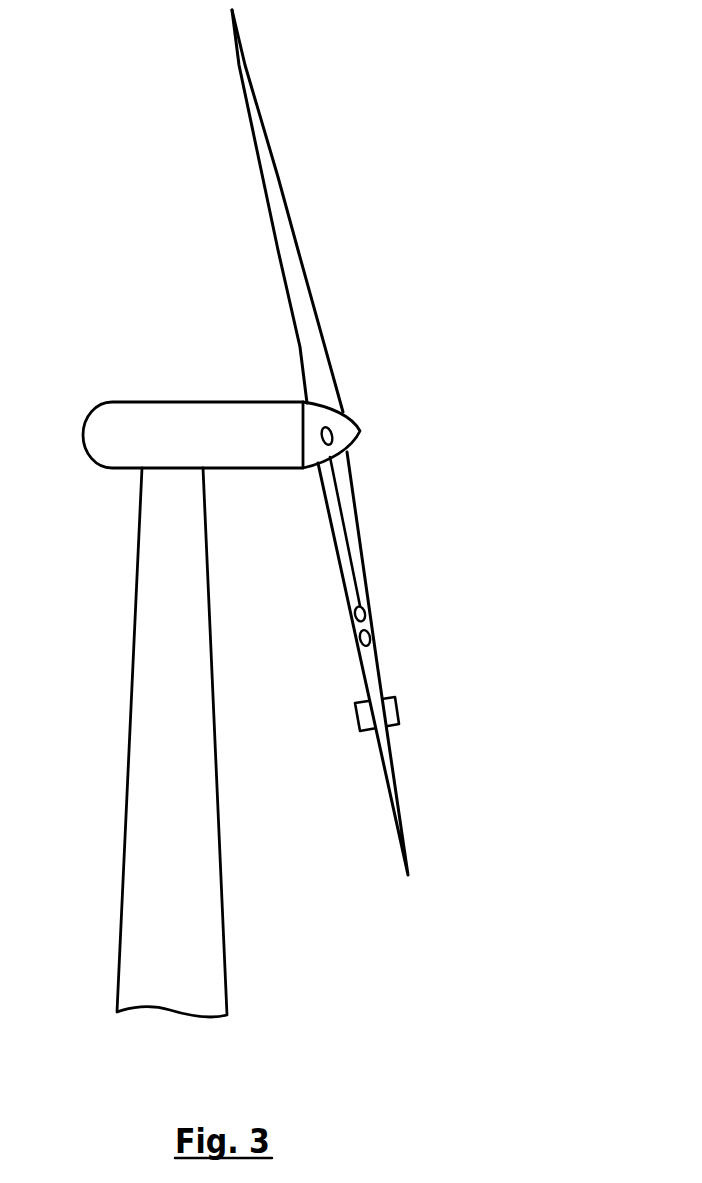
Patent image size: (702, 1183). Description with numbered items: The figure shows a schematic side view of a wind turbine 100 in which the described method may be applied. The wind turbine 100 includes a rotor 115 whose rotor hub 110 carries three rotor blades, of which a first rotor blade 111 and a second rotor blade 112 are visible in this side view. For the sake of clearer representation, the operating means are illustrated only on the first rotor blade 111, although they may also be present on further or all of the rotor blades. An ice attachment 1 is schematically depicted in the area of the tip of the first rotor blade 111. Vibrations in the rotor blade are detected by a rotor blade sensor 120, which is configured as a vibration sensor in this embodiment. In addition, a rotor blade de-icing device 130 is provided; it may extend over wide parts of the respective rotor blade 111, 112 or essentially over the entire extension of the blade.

The wind turbine 100 is at (220, 304).
The rotor hub 110 is at (407, 442).
The first rotor blade 111 is at (393, 785).
The second rotor blade 112 is at (298, 278).
The rotor 115 is at (358, 427).
The rotor blade sensor 120 is at (364, 606).
The rotor blade de-icing device 130 is at (369, 630).
The ice attachment 1 is at (396, 705).